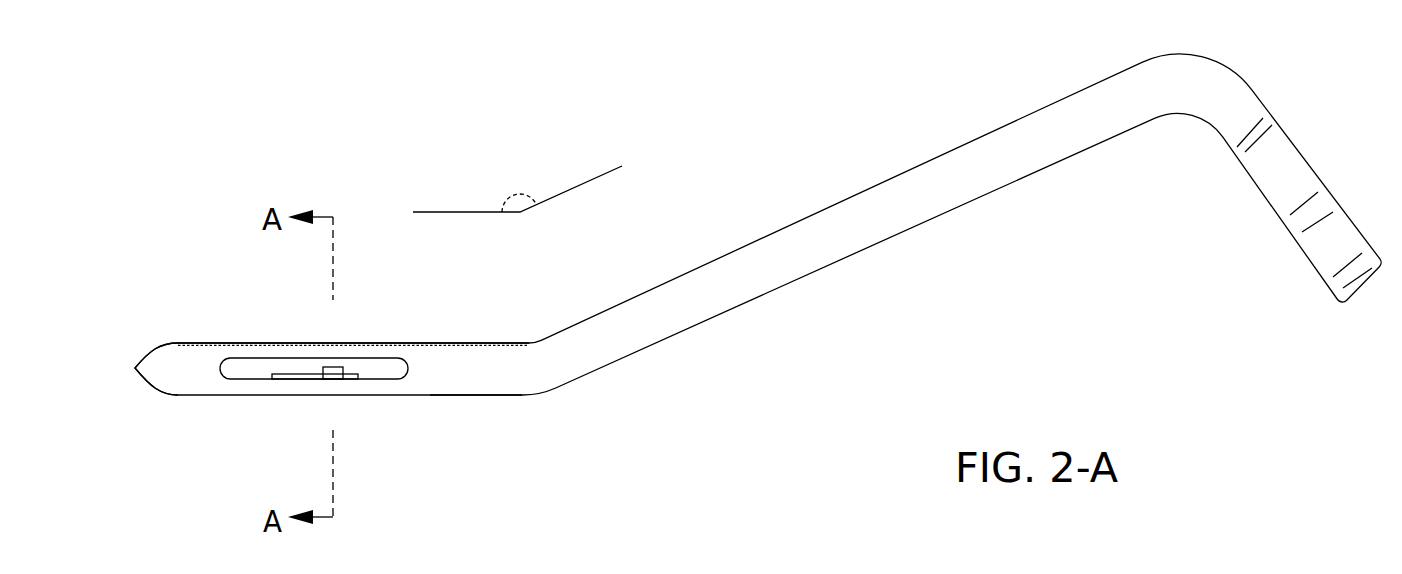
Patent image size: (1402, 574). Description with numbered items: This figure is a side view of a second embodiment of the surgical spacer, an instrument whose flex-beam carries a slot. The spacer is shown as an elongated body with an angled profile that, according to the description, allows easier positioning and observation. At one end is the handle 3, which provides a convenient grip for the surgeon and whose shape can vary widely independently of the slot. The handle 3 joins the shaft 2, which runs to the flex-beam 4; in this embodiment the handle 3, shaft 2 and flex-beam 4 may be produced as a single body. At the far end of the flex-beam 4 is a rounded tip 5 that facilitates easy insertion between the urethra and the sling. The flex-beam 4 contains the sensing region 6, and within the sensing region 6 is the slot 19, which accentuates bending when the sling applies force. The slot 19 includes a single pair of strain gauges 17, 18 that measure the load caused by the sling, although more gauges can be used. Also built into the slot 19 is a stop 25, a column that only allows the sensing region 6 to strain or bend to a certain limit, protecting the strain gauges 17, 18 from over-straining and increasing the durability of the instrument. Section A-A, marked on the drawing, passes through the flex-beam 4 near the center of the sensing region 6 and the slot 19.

The shaft 2 is at (852, 197).
The handle 3 is at (1298, 173).
The flex-beam 4 is at (474, 428).
The rounded tip 5 is at (133, 368).
The sensing region 6 is at (385, 348).
The strain gauge 17 is at (255, 419).
The strain gauge 18 is at (283, 380).
The slot 19 is at (234, 367).
The stop 25 is at (332, 367).